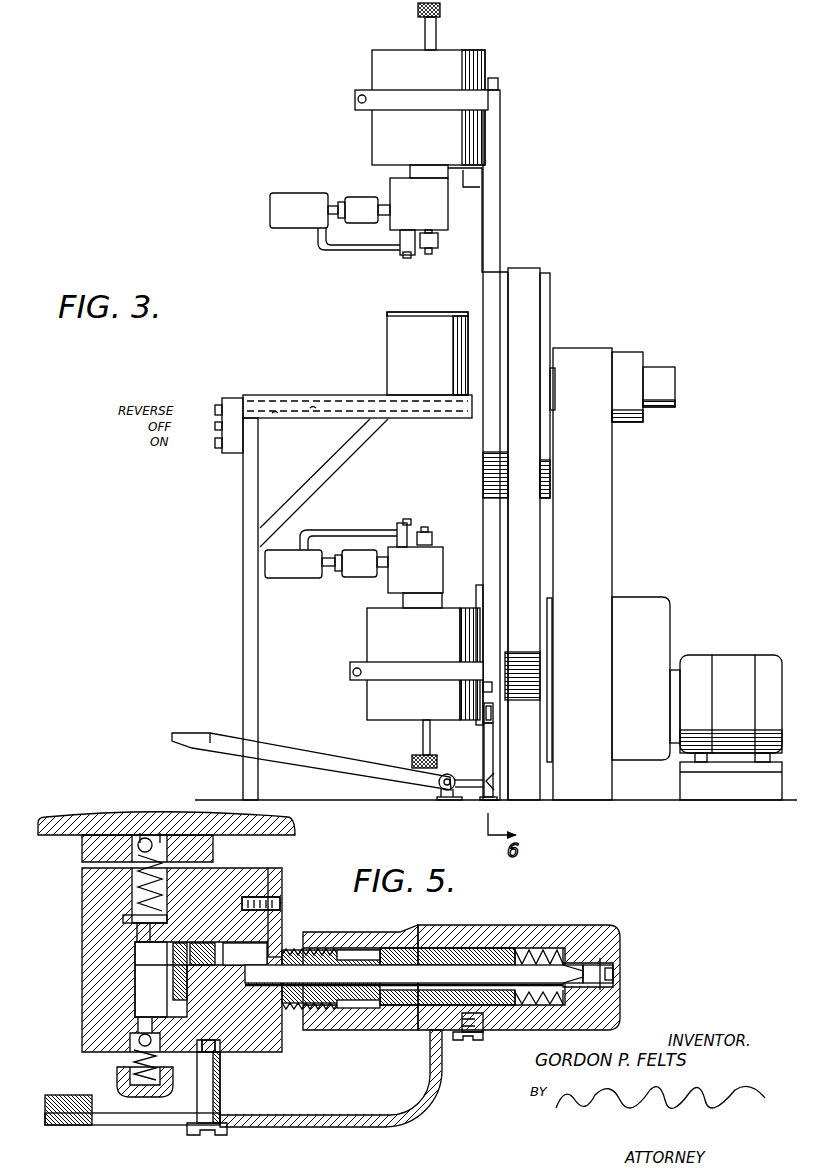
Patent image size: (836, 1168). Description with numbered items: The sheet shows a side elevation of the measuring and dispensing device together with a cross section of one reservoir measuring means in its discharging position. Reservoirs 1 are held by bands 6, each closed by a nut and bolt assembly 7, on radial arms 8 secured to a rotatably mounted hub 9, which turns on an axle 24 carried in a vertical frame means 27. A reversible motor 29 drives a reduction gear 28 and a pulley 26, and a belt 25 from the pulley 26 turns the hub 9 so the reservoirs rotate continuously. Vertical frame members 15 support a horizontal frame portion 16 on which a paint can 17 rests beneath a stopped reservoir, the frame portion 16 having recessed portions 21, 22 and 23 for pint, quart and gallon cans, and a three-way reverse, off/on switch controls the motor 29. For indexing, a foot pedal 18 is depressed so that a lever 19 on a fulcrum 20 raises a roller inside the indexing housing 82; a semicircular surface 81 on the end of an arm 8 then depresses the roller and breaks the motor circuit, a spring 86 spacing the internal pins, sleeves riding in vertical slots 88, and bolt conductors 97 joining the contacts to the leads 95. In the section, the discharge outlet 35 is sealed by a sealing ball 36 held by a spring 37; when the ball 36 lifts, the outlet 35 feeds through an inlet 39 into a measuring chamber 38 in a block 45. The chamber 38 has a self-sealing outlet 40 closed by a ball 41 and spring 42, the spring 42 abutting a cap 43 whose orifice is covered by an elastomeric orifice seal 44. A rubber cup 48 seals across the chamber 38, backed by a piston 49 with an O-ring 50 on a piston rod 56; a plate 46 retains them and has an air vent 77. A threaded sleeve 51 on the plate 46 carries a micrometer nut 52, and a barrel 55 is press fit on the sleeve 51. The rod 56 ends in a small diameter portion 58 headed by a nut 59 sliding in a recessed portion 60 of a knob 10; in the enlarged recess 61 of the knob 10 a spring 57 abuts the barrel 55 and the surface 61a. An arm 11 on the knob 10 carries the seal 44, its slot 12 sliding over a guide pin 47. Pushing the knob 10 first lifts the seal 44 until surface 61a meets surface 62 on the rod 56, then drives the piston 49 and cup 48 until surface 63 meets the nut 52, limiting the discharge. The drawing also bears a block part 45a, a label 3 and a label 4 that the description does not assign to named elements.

In FIG. 3, the reservoir 1 is at (520, 47).
In FIG. 5, the reservoir 1 is at (75, 836).
In FIG. 3, the adjusting stem 3 is at (436, 29).
In FIG. 3, the knob 4 is at (418, 10).
In FIG. 3, the band 6 is at (412, 97).
In FIG. 3, the nut and bolt assembly 7 is at (355, 99).
In FIG. 3, the radial arm 8 is at (496, 193).
In FIG. 3, the hub 9 is at (498, 290).
In FIG. 3, the knob 10 is at (270, 212).
In FIG. 3, the arm 11 is at (362, 253).
In FIG. 5, the arm 11 is at (337, 1127).
In FIG. 5, the slot 12 is at (135, 1120).
In FIG. 3, the vertical frame member 15 is at (243, 526).
In FIG. 3, the horizontal frame portion 16 is at (292, 395).
In FIG. 3, the paint can 17 is at (427, 353).
In FIG. 3, the foot pedal 18 is at (183, 733).
In FIG. 3, the lever 19 is at (328, 762).
In FIG. 3, the fulcrum 20 is at (447, 800).
In FIG. 3, the recessed portion 21 is at (275, 413).
In FIG. 3, the recessed portion 22 is at (312, 408).
In FIG. 3, the recessed portion 23 is at (360, 397).
In FIG. 3, the axle 24 is at (552, 395).
In FIG. 3, the belt 25 is at (522, 316).
In FIG. 3, the pulley 26 is at (537, 688).
In FIG. 3, the vertical frame means 27 is at (587, 522).
In FIG. 3, the reduction gear 28 is at (660, 605).
In FIG. 3, the reversible motor 29 is at (725, 662).
In FIG. 5, the discharge outlet 35 is at (146, 837).
In FIG. 5, the sealing ball 36 is at (152, 845).
In FIG. 5, the spring 37 is at (164, 860).
In FIG. 5, the measuring chamber 38 is at (137, 983).
In FIG. 5, the inlet 39 is at (148, 967).
In FIG. 5, the outlet 40 is at (143, 1025).
In FIG. 5, the ball 41 is at (131, 1045).
In FIG. 5, the spring 42 is at (124, 1058).
In FIG. 3, the cap 43 is at (437, 246).
In FIG. 5, the cap 43 is at (117, 1080).
In FIG. 3, the orifice seal 44 is at (431, 253).
In FIG. 5, the orifice seal 44 is at (63, 1125).
In FIG. 3, the block 45 is at (443, 193).
In FIG. 5, the block 45 is at (85, 915).
In FIG. 5, the body extension 45a is at (153, 1092).
In FIG. 3, the plate 46 is at (395, 178).
In FIG. 5, the plate 46 is at (282, 880).
In FIG. 3, the guide pin 47 is at (404, 255).
In FIG. 5, the guide pin 47 is at (200, 1098).
In FIG. 5, the rubber cup 48 is at (151, 979).
In FIG. 5, the piston 49 is at (214, 1050).
In FIG. 5, the O-ring 50 is at (226, 955).
In FIG. 3, the sleeve 51 is at (382, 210).
In FIG. 5, the sleeve 51 is at (315, 1030).
In FIG. 3, the micrometer nut 52 is at (365, 200).
In FIG. 5, the micrometer nut 52 is at (373, 932).
In FIG. 3, the barrel 55 is at (336, 233).
In FIG. 5, the barrel 55 is at (423, 1028).
In FIG. 5, the piston rod 56 is at (318, 973).
In FIG. 5, the spring 57 is at (540, 950).
In FIG. 5, the small diameter portion 58 is at (620, 950).
In FIG. 5, the nut 59 is at (618, 968).
In FIG. 5, the recessed portion 60 is at (620, 985).
In FIG. 5, the recessed portion 61 is at (527, 950).
In FIG. 5, the surface 61a is at (560, 950).
In FIG. 5, the surface 62 is at (580, 985).
In FIG. 5, the surface 63 is at (418, 925).
In FIG. 5, the air vent 77 is at (280, 1013).
In FIG. 3, the semicircular surface 81 is at (500, 81).
In FIG. 3, the housing 82 is at (487, 747).
In FIG. 3, the spring 86 is at (493, 713).
In FIG. 3, the slot 88 is at (480, 773).
In FIG. 3, the lead 95 is at (500, 786).
In FIG. 3, the bolt conductor 97 is at (483, 795).